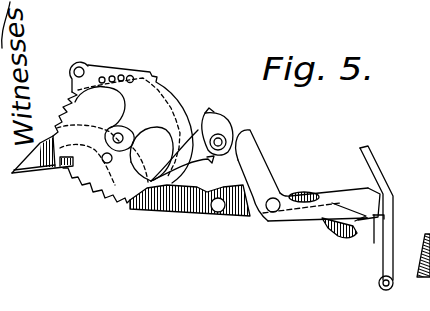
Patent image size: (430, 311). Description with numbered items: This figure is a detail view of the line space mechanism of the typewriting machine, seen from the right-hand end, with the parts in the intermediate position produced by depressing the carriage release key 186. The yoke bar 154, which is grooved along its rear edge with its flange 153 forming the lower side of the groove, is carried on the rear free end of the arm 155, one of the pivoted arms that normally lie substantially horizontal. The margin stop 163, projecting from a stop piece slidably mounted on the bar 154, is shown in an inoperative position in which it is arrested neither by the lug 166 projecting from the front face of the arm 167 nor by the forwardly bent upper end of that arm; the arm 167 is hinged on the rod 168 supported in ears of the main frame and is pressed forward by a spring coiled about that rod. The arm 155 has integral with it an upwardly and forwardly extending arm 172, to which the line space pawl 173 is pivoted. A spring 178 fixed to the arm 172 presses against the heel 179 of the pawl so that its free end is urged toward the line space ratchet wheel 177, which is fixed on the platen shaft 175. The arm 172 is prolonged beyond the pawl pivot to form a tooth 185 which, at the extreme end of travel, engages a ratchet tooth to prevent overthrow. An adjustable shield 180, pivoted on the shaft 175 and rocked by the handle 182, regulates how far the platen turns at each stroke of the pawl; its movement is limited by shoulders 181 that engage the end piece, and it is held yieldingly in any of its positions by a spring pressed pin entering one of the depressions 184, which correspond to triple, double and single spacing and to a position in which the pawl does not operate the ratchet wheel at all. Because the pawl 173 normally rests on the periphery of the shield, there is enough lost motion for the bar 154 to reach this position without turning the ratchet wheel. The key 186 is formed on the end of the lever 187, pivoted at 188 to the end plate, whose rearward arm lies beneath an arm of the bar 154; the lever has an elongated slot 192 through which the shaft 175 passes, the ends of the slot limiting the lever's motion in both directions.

The flange 153 is at (385, 221).
The yoke bar 154 is at (330, 224).
The arm 155 is at (330, 201).
The margin stop 163 is at (376, 196).
The lug 166 is at (383, 229).
The arm 167 is at (394, 206).
The rod 168 is at (386, 291).
The arm 172 is at (260, 162).
The line space pawl 173 is at (205, 161).
The platen shaft 175 is at (125, 133).
The line space ratchet wheel 177 is at (117, 200).
The spring 178 is at (230, 151).
The heel 179 is at (210, 148).
The adjustable shield 180 is at (177, 96).
The shoulders 181 is at (120, 72).
The handle 182 is at (79, 65).
The holes or depressions 184 is at (128, 75).
The tooth 185 is at (208, 112).
The carriage release key 186 is at (16, 176).
The lever 187 is at (174, 216).
The pivot 188 is at (218, 212).
The elongated slot 192 is at (114, 161).